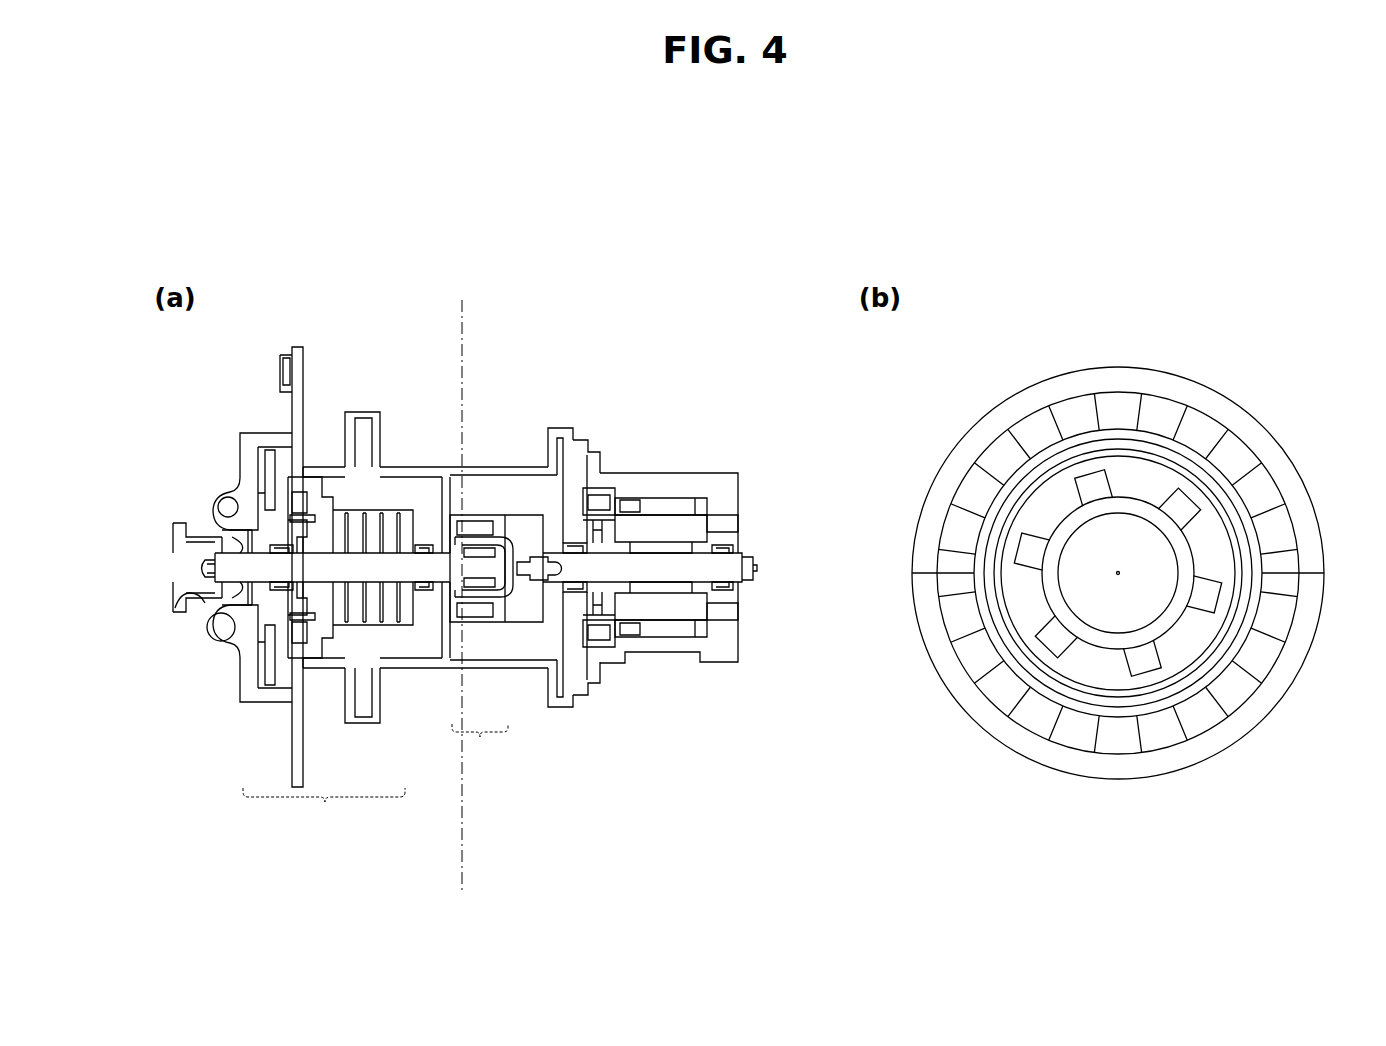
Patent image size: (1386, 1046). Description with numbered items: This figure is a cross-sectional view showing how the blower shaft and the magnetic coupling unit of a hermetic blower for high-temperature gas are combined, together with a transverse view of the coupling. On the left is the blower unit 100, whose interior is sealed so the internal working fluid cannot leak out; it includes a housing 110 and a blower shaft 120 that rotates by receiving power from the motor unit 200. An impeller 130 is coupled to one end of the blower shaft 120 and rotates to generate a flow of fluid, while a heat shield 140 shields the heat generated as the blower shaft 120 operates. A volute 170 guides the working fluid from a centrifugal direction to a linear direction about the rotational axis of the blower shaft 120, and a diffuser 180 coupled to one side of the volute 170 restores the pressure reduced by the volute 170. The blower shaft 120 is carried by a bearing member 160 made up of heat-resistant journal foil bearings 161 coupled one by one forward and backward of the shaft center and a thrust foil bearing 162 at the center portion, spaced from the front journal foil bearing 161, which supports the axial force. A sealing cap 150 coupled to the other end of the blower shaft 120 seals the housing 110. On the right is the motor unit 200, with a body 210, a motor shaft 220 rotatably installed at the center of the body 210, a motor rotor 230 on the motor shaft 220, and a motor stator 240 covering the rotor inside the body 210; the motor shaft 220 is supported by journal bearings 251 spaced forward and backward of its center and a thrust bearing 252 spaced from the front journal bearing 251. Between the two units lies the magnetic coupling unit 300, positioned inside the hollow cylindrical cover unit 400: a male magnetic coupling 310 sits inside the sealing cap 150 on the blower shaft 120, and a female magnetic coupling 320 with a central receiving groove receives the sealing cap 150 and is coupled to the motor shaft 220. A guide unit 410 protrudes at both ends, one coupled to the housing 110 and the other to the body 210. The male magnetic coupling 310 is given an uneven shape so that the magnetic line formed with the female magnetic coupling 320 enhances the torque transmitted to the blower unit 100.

The blower unit 100 is at (258, 426).
The housing 110 is at (393, 490).
The blower shaft 120 is at (352, 568).
The impeller 130 is at (210, 533).
The heat shield 140 is at (275, 468).
The sealing cap 150 is at (500, 520).
The bearing member 160 is at (324, 808).
The journal foil bearing 161 is at (272, 655).
The thrust foil bearing 162 is at (296, 625).
The volute 170 is at (190, 605).
The diffuser 180 is at (215, 642).
The motor unit 200 is at (656, 464).
The body 210 is at (678, 570).
The motor shaft 220 is at (716, 600).
The motor rotor 230 is at (660, 590).
The motor stator 240 is at (645, 605).
The journal bearing 251 is at (572, 540).
The thrust bearing 252 is at (604, 513).
The magnetic coupling unit 300 is at (480, 743).
The male magnetic coupling 310 is at (470, 630).
The female magnetic coupling 320 is at (482, 625).
The cover unit 400 is at (510, 462).
The guide unit 410 is at (365, 445).